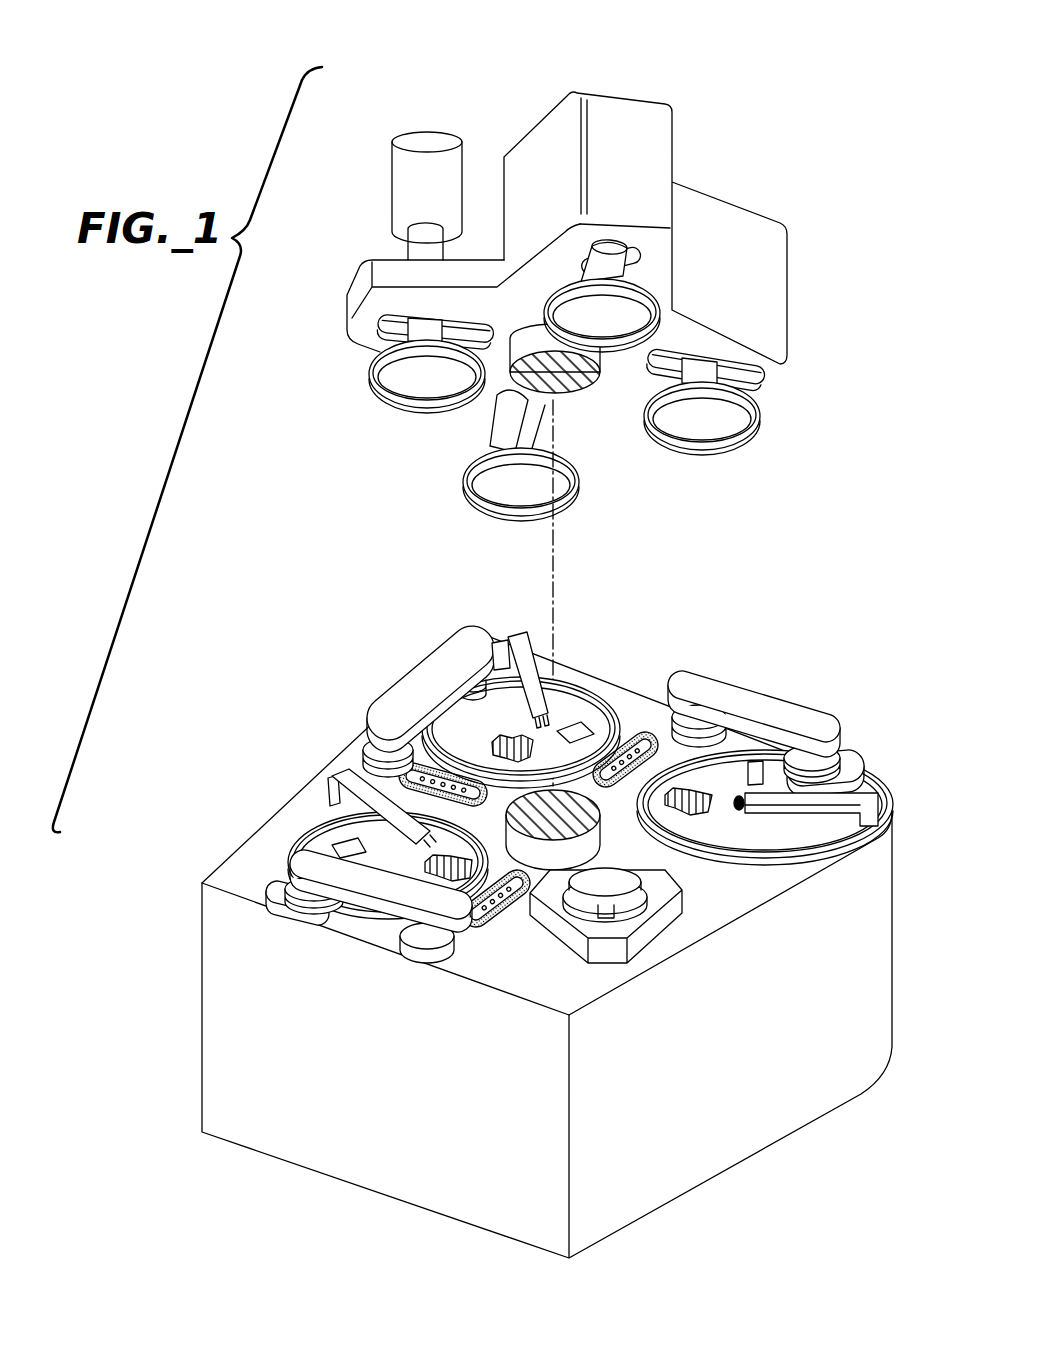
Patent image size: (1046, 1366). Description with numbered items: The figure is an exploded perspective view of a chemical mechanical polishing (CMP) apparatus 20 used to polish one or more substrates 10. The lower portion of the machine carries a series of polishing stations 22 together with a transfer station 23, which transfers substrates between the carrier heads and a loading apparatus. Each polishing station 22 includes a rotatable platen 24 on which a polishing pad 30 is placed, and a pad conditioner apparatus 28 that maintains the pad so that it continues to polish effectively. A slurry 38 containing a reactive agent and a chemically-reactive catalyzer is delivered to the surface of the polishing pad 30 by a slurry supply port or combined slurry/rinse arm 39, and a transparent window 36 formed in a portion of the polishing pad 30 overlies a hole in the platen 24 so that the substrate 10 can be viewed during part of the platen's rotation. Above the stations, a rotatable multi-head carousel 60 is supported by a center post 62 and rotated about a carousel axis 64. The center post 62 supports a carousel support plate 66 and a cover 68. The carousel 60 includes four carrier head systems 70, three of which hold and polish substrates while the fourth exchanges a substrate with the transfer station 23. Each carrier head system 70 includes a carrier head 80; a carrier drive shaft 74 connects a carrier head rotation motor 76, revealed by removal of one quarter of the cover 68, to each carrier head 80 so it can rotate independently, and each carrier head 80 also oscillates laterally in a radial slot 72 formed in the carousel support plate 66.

The substrate 10 is at (630, 322).
The CMP apparatus 20 is at (722, 44).
The polishing station 22 is at (620, 695).
The transfer station 23 is at (572, 962).
The rotatable platen 24 is at (577, 723).
The pad conditioner apparatus 28 is at (403, 673).
The polishing pad 30 is at (563, 697).
The transparent window 36 is at (592, 727).
The slurry 38 is at (497, 746).
The slurry/rinse arm 39 is at (517, 625).
The rotatable multi-head carousel 60 is at (810, 326).
The center post 62 is at (576, 387).
The carousel axis 64 is at (565, 565).
The carousel support plate 66 is at (355, 318).
The cover 68 is at (673, 132).
The carrier head system 70 is at (660, 295).
The radial slot 72 is at (627, 248).
The carrier drive shaft 74 is at (590, 260).
The carrier head rotation motor 76 is at (392, 165).
The carrier head 80 is at (640, 293).